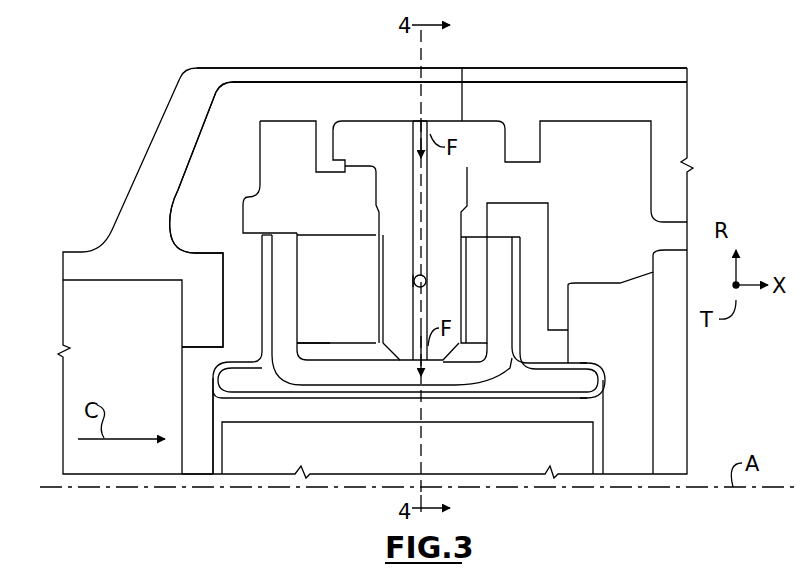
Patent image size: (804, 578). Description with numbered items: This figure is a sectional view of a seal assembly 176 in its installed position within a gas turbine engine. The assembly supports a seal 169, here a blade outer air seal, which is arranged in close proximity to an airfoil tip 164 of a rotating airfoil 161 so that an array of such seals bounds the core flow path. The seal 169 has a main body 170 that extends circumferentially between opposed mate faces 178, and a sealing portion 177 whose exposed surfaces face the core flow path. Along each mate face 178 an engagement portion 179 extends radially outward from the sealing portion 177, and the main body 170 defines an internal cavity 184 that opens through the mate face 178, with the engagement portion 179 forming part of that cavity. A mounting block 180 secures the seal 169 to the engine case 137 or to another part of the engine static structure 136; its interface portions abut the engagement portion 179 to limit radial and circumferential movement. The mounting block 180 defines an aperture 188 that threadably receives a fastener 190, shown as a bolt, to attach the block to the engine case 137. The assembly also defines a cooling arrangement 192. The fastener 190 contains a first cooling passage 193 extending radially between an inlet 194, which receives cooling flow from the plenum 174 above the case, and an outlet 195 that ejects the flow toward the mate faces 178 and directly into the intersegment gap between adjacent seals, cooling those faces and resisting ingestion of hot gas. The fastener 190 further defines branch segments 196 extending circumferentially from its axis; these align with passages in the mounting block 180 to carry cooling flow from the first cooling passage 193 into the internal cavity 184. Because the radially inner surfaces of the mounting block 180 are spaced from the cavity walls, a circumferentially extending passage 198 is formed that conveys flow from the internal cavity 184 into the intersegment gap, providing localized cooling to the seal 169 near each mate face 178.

The seal assembly 176 is at (143, 50).
The engine static structure 136 is at (262, 64).
The engine case 137 is at (428, 214).
The plenum 174 is at (290, 88).
The fastener 190 is at (468, 125).
The cooling arrangement 192 is at (491, 131).
The first cooling passage 193 is at (424, 200).
The inlet 194 is at (432, 108).
The branch segments 196 is at (413, 281).
The aperture 188 is at (388, 267).
The main body 170 is at (256, 297).
The internal cavity 184 is at (300, 326).
The circumferentially extending passage 198 is at (322, 349).
The outlet 195 is at (430, 356).
The mounting block 180 is at (480, 268).
The engagement portion 179 is at (505, 290).
The mate face 178 is at (593, 363).
The sealing portion 177 is at (602, 406).
The airfoil tip 164 is at (278, 421).
The seal 169 is at (211, 448).
The airfoil 161 is at (222, 462).